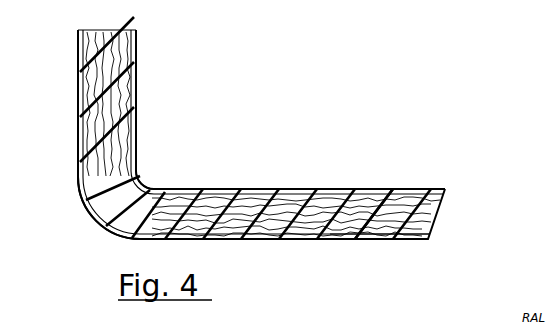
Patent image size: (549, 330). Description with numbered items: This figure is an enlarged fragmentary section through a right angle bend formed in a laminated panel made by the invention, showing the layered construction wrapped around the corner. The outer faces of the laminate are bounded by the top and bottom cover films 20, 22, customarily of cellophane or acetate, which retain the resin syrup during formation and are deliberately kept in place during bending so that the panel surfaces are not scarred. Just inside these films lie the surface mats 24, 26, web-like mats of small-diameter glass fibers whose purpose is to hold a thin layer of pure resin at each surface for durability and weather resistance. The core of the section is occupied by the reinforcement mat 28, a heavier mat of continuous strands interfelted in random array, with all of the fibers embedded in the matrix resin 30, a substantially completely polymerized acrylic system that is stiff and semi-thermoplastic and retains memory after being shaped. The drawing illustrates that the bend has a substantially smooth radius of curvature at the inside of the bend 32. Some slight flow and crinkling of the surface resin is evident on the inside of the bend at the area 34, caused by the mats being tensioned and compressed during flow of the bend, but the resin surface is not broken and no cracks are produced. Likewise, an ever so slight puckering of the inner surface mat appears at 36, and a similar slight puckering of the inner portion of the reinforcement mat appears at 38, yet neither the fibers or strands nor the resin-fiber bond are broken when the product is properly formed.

The top cover film 20 is at (352, 190).
The bottom cover film 22 is at (354, 242).
The surface mat 24 is at (380, 192).
The surface mat 26 is at (382, 241).
The reinforcement mat 28 is at (444, 203).
The matrix resin 30 is at (322, 190).
The inside of the bend 32 is at (166, 173).
The area of surface resin flow 34 is at (154, 182).
The puckering of inner surface mat 36 is at (112, 190).
The puckering of reinforcement mat 38 is at (122, 189).